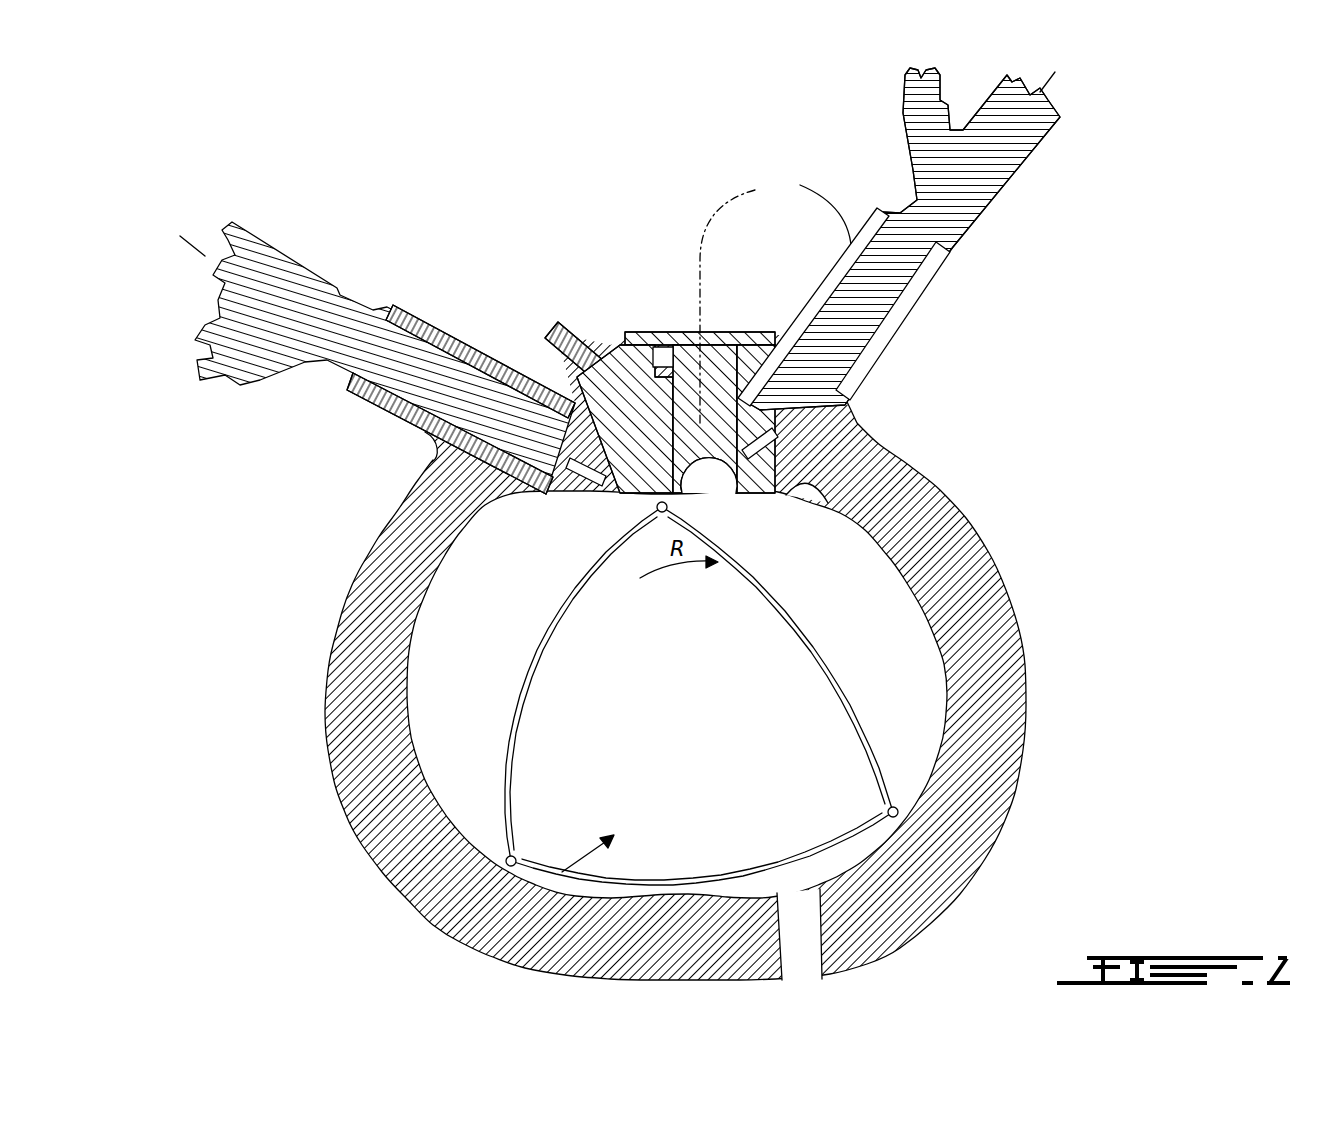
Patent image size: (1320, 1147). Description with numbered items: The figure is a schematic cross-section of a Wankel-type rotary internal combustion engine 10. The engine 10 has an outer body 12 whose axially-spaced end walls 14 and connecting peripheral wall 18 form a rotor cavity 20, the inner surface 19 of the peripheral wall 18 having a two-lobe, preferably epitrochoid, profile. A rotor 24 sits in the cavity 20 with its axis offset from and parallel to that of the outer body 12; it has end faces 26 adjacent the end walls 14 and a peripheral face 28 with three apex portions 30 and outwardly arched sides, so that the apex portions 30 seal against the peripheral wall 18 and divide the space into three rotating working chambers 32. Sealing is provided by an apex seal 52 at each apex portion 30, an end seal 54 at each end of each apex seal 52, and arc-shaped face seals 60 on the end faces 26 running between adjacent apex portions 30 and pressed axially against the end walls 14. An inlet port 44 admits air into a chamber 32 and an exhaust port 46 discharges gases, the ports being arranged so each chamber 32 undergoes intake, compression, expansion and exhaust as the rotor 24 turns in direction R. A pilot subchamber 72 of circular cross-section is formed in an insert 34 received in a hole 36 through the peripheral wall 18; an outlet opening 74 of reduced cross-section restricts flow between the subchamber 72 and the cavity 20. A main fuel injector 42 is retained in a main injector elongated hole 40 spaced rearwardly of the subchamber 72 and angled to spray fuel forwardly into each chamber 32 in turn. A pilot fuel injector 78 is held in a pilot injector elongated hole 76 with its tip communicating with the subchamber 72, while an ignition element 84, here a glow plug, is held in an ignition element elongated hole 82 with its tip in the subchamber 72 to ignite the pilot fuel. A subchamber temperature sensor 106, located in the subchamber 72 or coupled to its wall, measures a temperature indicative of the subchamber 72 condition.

The rotary internal combustion engine 10 is at (1131, 340).
The outer body 12 is at (928, 454).
The end walls 14 is at (870, 560).
The peripheral wall 18 is at (975, 610).
The inner surface 19 is at (848, 440).
The rotor cavity 20 is at (908, 677).
The rotor 24 is at (530, 940).
The end faces 26 is at (803, 780).
The peripheral face 28 is at (830, 870).
The apex portions 30 is at (905, 822).
The working chambers 32 is at (495, 668).
The insert 34 is at (723, 430).
The hole 36 is at (700, 430).
The main injector elongated hole 40 is at (432, 325).
The main fuel injector 42 is at (258, 224).
The inlet port 44 is at (385, 855).
The exhaust port 46 is at (805, 955).
The apex seal 52 is at (465, 920).
The end seal 54 is at (525, 852).
The face seal 60 is at (515, 742).
The pilot subchamber 72 is at (760, 393).
The outlet opening 74 is at (718, 498).
The pilot injector elongated hole 76 is at (944, 283).
The pilot fuel injector 78 is at (1044, 158).
The ignition element elongated hole 82 is at (631, 342).
The ignition element 84 is at (549, 322).
The subchamber temperature sensor 106 is at (775, 300).